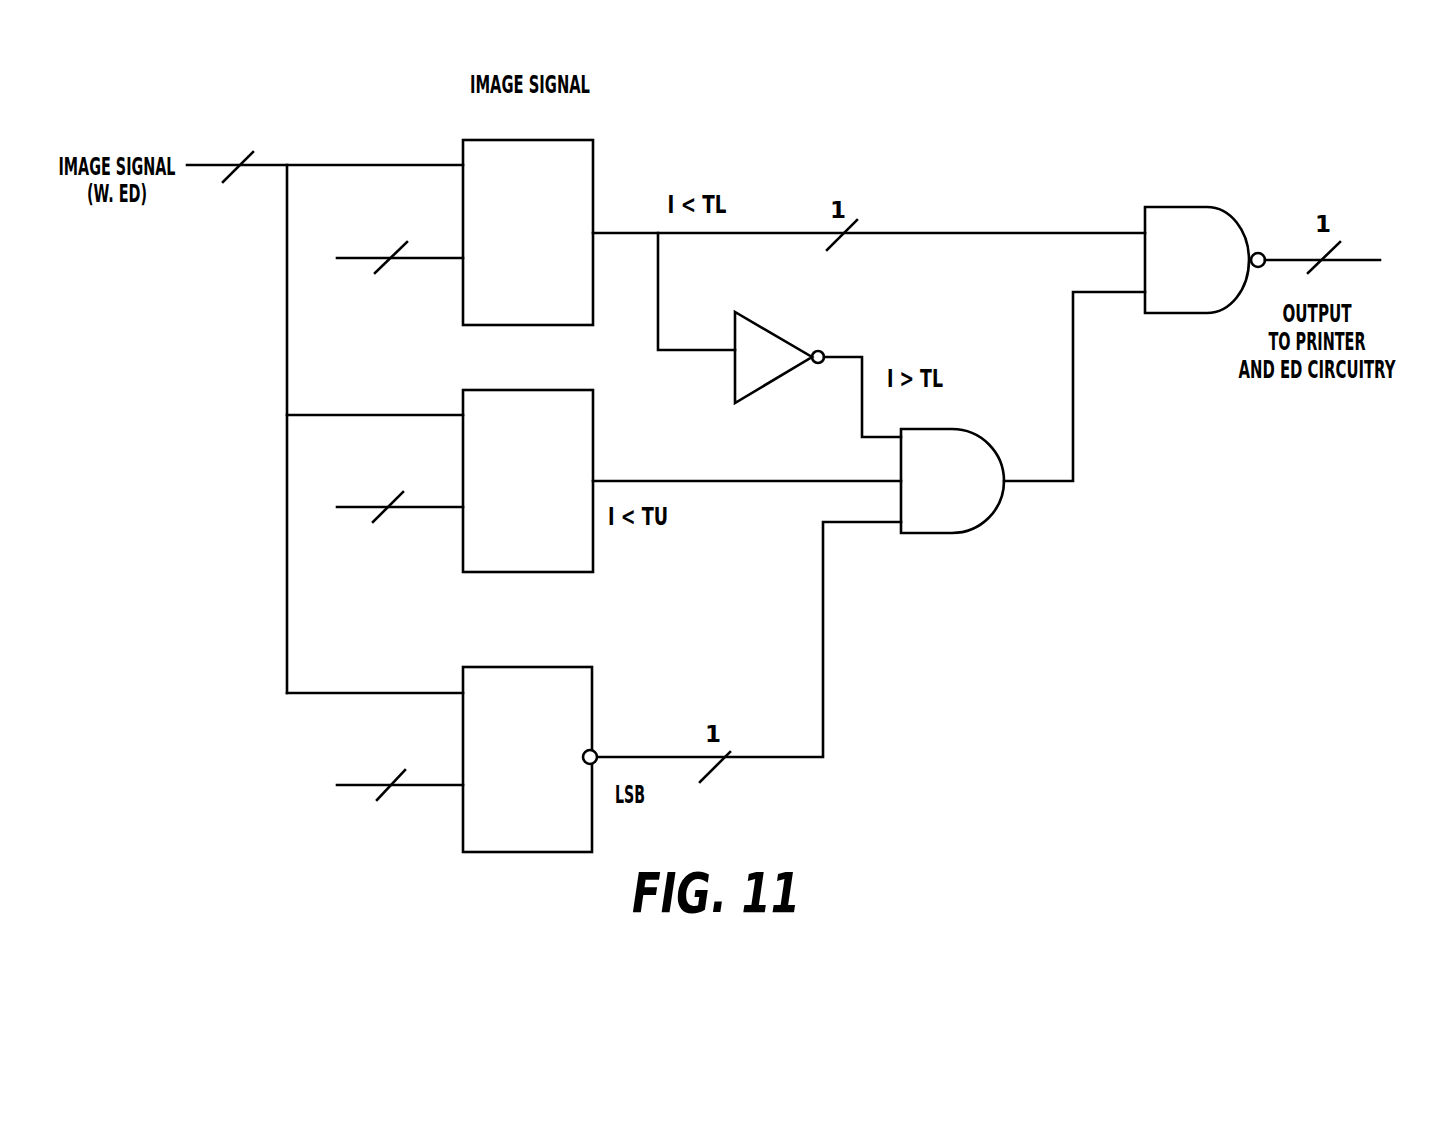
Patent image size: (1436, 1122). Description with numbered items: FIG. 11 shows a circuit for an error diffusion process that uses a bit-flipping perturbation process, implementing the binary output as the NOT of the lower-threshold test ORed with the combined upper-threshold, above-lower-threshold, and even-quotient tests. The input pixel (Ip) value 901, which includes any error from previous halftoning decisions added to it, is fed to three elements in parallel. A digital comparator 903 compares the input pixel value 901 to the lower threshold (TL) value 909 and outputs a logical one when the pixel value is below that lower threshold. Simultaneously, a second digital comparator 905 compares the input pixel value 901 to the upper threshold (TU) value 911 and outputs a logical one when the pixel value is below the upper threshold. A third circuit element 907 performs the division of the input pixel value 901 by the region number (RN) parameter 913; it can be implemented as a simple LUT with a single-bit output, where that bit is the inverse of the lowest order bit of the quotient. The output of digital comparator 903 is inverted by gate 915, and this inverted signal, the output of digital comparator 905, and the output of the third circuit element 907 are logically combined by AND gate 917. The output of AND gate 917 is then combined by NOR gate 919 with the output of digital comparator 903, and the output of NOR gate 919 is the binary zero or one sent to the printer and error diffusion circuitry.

The input pixel (Ip) value 901 is at (325, 399).
The digital comparator 903 is at (593, 156).
The digital comparator 905 is at (593, 422).
The third circuit element 907 is at (592, 710).
The lower threshold (TL) value 909 is at (387, 263).
The upper threshold (TU) value 911 is at (387, 510).
The region number (RN) parameter 913 is at (387, 782).
The gate 915 is at (773, 333).
The AND gate 917 is at (952, 508).
The NOR gate 919 is at (1223, 207).